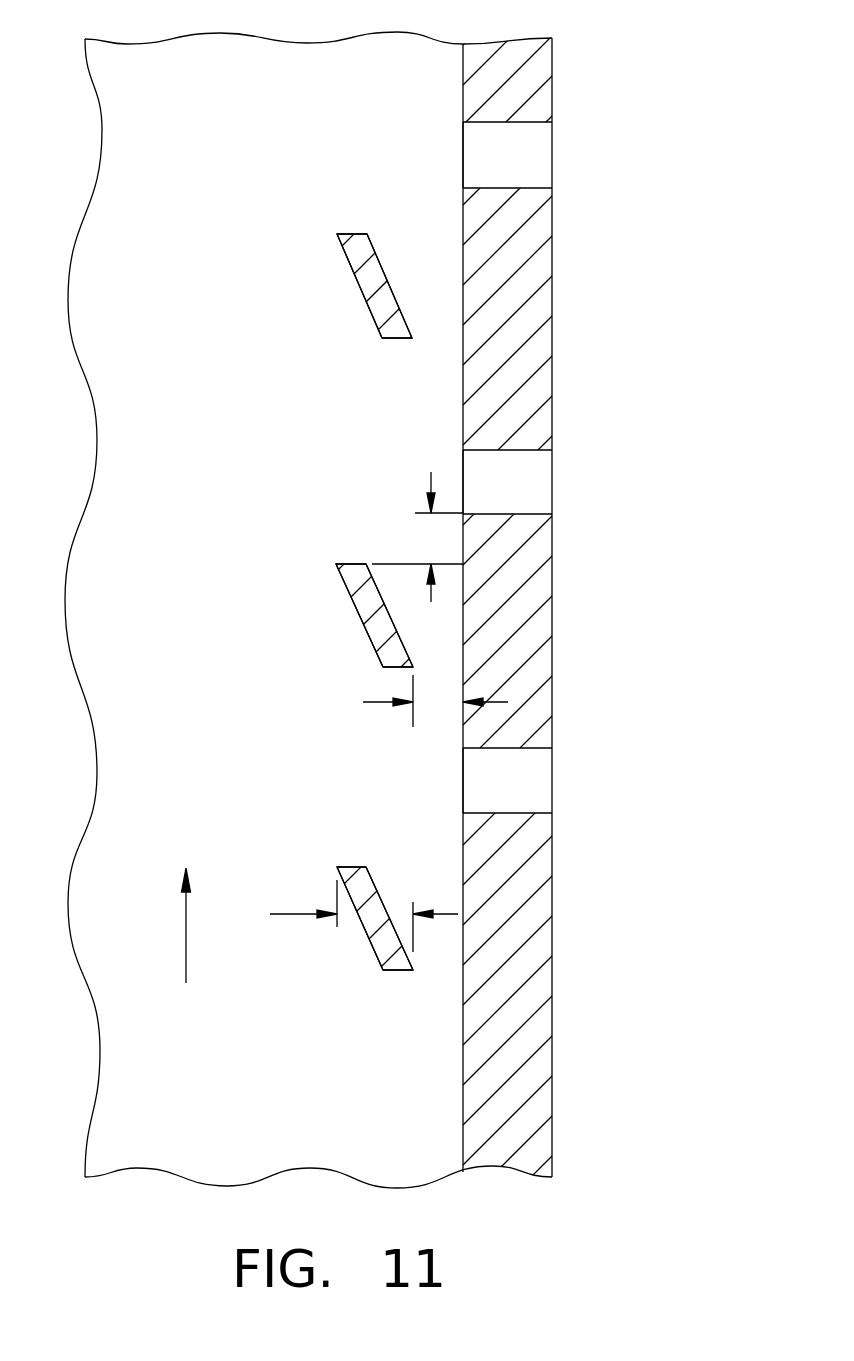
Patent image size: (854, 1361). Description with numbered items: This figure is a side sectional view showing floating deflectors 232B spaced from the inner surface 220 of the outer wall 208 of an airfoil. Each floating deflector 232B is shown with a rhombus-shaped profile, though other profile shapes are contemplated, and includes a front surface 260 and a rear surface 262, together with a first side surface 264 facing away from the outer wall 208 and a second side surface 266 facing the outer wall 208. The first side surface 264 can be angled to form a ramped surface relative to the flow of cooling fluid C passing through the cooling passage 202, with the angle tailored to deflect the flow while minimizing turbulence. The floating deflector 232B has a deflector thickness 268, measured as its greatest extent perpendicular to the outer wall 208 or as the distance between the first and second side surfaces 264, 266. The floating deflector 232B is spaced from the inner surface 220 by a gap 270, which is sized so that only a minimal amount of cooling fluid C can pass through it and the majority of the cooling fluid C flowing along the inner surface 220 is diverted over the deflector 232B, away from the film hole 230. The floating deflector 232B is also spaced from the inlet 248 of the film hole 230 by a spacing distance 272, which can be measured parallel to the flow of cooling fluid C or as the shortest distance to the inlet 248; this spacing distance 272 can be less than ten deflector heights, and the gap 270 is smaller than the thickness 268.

The cooling passage 202 is at (188, 139).
The outer wall 208 is at (552, 309).
The inner surface 220 is at (463, 90).
The film hole 230 is at (552, 132).
The inlet 248 is at (463, 148).
The floating deflector 232B is at (347, 322).
The front surface 260 is at (400, 338).
The rear surface 262 is at (350, 233).
The first side surface 264 is at (365, 296).
The second side surface 266 is at (377, 249).
The deflector thickness 268 is at (290, 916).
The gap 270 is at (378, 702).
The spacing distance 272 is at (427, 474).
The cooling fluid C is at (186, 935).